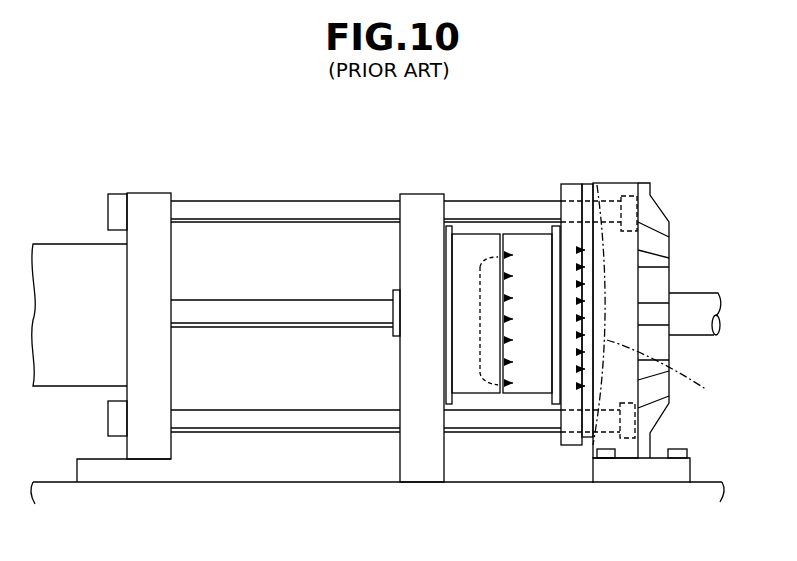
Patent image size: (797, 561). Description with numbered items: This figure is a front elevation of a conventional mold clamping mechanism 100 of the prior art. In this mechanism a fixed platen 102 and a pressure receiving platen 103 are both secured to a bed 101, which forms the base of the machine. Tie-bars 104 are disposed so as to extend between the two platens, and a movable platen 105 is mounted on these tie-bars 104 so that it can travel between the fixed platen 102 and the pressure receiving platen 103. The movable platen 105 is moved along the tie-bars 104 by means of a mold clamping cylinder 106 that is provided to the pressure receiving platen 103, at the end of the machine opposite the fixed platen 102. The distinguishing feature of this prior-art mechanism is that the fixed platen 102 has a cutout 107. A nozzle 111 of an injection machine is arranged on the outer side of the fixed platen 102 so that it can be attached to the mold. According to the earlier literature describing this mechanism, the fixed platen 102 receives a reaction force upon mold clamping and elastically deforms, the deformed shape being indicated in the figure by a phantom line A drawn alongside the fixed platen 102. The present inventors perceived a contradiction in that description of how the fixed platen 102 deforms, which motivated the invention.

The mold clamping mechanism 100 is at (668, 147).
The bed 101 is at (364, 482).
The fixed platen 102 is at (617, 182).
The pressure receiving platen 103 is at (150, 192).
The tie-bars 104 is at (286, 206).
The movable platen 105 is at (422, 200).
The mold clamping cylinder 106 is at (72, 258).
The cutout 107 is at (585, 440).
The nozzle 111 is at (700, 300).
The phantom line A is at (666, 372).